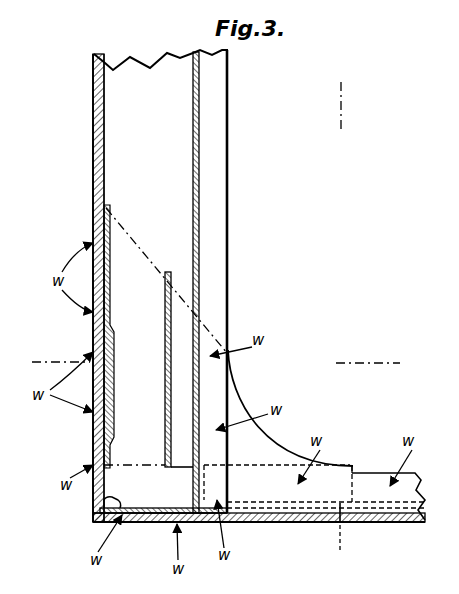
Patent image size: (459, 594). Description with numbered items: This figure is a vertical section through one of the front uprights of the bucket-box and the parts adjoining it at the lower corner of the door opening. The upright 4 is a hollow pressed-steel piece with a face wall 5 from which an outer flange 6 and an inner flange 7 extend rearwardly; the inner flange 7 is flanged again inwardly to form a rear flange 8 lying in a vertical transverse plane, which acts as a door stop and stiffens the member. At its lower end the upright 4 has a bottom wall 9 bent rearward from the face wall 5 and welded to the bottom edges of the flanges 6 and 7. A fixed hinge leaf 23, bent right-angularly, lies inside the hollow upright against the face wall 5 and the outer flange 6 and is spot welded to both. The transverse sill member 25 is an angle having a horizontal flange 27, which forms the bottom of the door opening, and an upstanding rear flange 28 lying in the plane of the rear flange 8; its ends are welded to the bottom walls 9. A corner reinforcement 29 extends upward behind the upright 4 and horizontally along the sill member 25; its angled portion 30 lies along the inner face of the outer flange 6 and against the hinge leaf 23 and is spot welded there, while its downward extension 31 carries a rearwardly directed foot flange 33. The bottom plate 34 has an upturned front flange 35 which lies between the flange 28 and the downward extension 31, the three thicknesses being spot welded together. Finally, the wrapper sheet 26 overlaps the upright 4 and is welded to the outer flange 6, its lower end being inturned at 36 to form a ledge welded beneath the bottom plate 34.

The upright 4 is at (340, 319).
The face wall 5 is at (213, 364).
The outer flange 6 is at (105, 160).
The inner flange 7 is at (199, 167).
The rear flange 8 is at (217, 205).
The bottom wall 9 is at (176, 514).
The fixed hinge leaf 23 is at (113, 392).
The transverse sill member 25 is at (415, 523).
The wrapper sheet 26 is at (93, 166).
The horizontal flange 27 is at (296, 523).
The upstanding rear flange 28 is at (410, 486).
The corner reinforcement 29 is at (244, 388).
The angled portion 30 is at (122, 238).
The downward extension 31 is at (353, 470).
The foot flange 33 is at (313, 525).
The bottom plate 34 is at (110, 498).
The upturned front flange 35 is at (203, 503).
The inturned ledge 36 is at (100, 520).